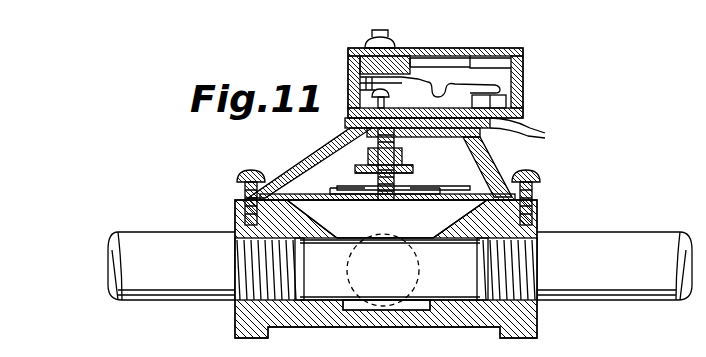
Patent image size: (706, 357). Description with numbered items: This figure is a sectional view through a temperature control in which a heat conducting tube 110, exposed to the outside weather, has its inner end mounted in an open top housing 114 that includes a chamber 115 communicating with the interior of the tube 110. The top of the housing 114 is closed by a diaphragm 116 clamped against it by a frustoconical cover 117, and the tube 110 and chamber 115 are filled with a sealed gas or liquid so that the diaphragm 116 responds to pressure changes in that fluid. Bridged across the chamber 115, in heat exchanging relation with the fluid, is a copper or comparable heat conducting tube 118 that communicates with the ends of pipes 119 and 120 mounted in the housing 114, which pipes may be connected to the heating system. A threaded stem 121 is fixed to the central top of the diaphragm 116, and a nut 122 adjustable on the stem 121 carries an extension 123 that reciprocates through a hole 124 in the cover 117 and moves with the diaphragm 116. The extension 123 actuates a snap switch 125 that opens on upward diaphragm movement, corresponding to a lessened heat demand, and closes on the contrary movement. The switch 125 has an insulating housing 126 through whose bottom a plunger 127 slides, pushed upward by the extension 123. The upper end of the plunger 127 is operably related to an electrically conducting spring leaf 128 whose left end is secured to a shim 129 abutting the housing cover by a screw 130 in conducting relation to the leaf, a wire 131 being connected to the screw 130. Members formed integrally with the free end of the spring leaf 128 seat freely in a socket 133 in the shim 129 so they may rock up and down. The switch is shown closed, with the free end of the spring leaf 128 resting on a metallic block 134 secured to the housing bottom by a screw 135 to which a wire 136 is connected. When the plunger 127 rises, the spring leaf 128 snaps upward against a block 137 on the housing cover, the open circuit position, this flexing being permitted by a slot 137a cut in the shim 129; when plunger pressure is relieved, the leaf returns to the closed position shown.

The heat conducting tube 110 is at (383, 318).
The open top housing 114 is at (533, 212).
The chamber 115 is at (370, 203).
The diaphragm 116 is at (472, 194).
The frustoconical cover 117 is at (295, 166).
The tube 118 is at (397, 200).
The pipe 119 is at (170, 218).
The pipe 120 is at (647, 222).
The threaded stem 121 is at (406, 174).
The nut 122 is at (404, 157).
The extension 123 is at (367, 152).
The hole 124 is at (350, 138).
The snap switch 125 is at (522, 89).
The housing 126 is at (525, 97).
The plunger 127 is at (349, 77).
The spring leaf 128 is at (395, 86).
The shim 129 is at (392, 78).
The screw 130 is at (373, 39).
The wire 131 is at (360, 44).
The socket 133 is at (450, 50).
The metallic block 134 is at (525, 109).
The screw 135 is at (487, 130).
The wire 136 is at (538, 137).
The block 137 is at (500, 64).
The slot 137a is at (349, 62).